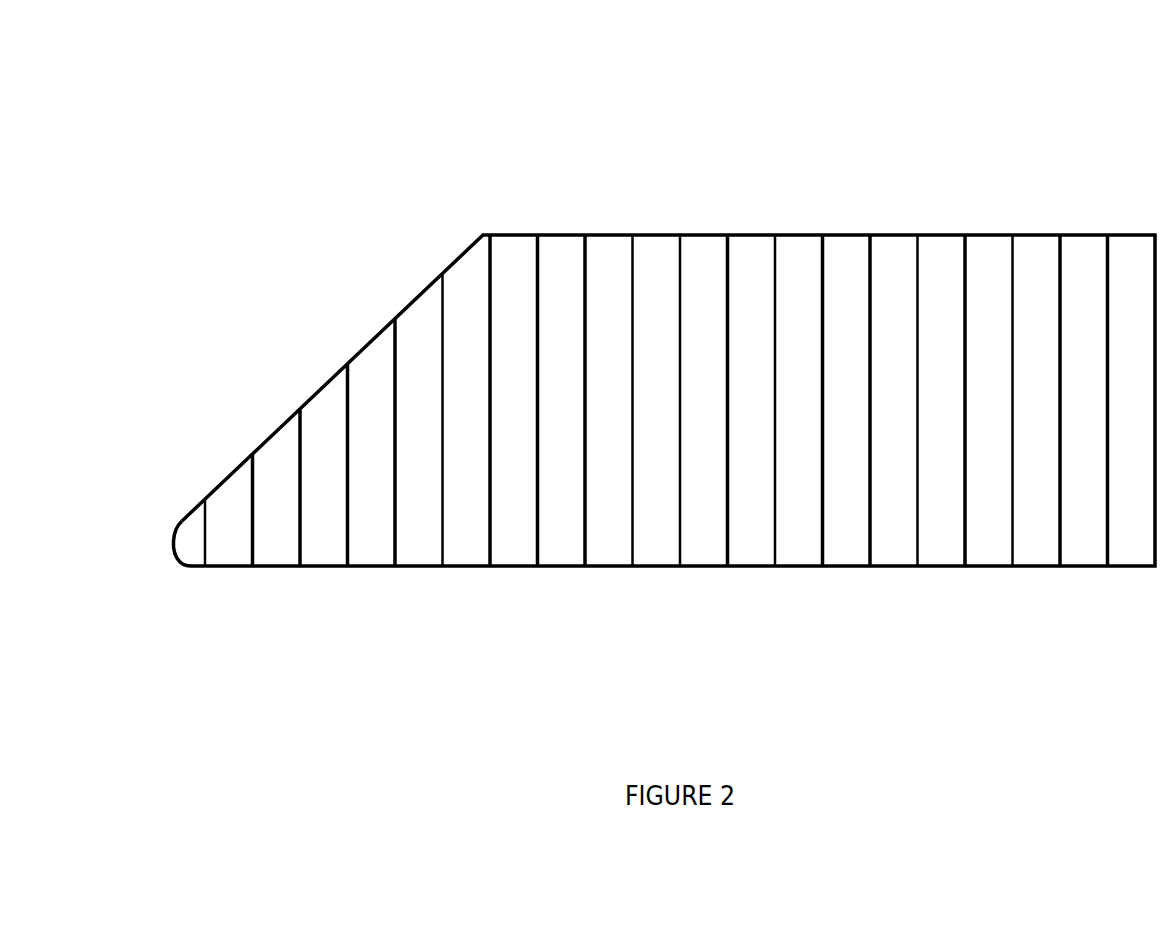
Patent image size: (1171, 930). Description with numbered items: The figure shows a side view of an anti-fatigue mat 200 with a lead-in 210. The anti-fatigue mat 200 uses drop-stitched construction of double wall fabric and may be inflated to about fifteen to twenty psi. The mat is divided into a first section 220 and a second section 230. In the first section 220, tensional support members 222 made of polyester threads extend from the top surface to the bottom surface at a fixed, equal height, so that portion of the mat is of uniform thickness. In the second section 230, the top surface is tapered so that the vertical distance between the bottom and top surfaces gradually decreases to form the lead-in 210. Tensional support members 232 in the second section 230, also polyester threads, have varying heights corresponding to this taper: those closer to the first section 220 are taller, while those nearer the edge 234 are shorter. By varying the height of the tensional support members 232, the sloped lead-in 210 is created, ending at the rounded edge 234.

The anti-fatigue mat 200 is at (380, 116).
The lead-in 210 is at (290, 332).
The first section 220 is at (738, 488).
The tensional support members 222 is at (724, 323).
The second section 230 is at (375, 518).
The tensional support members 232 is at (293, 488).
The edge 234 is at (176, 551).